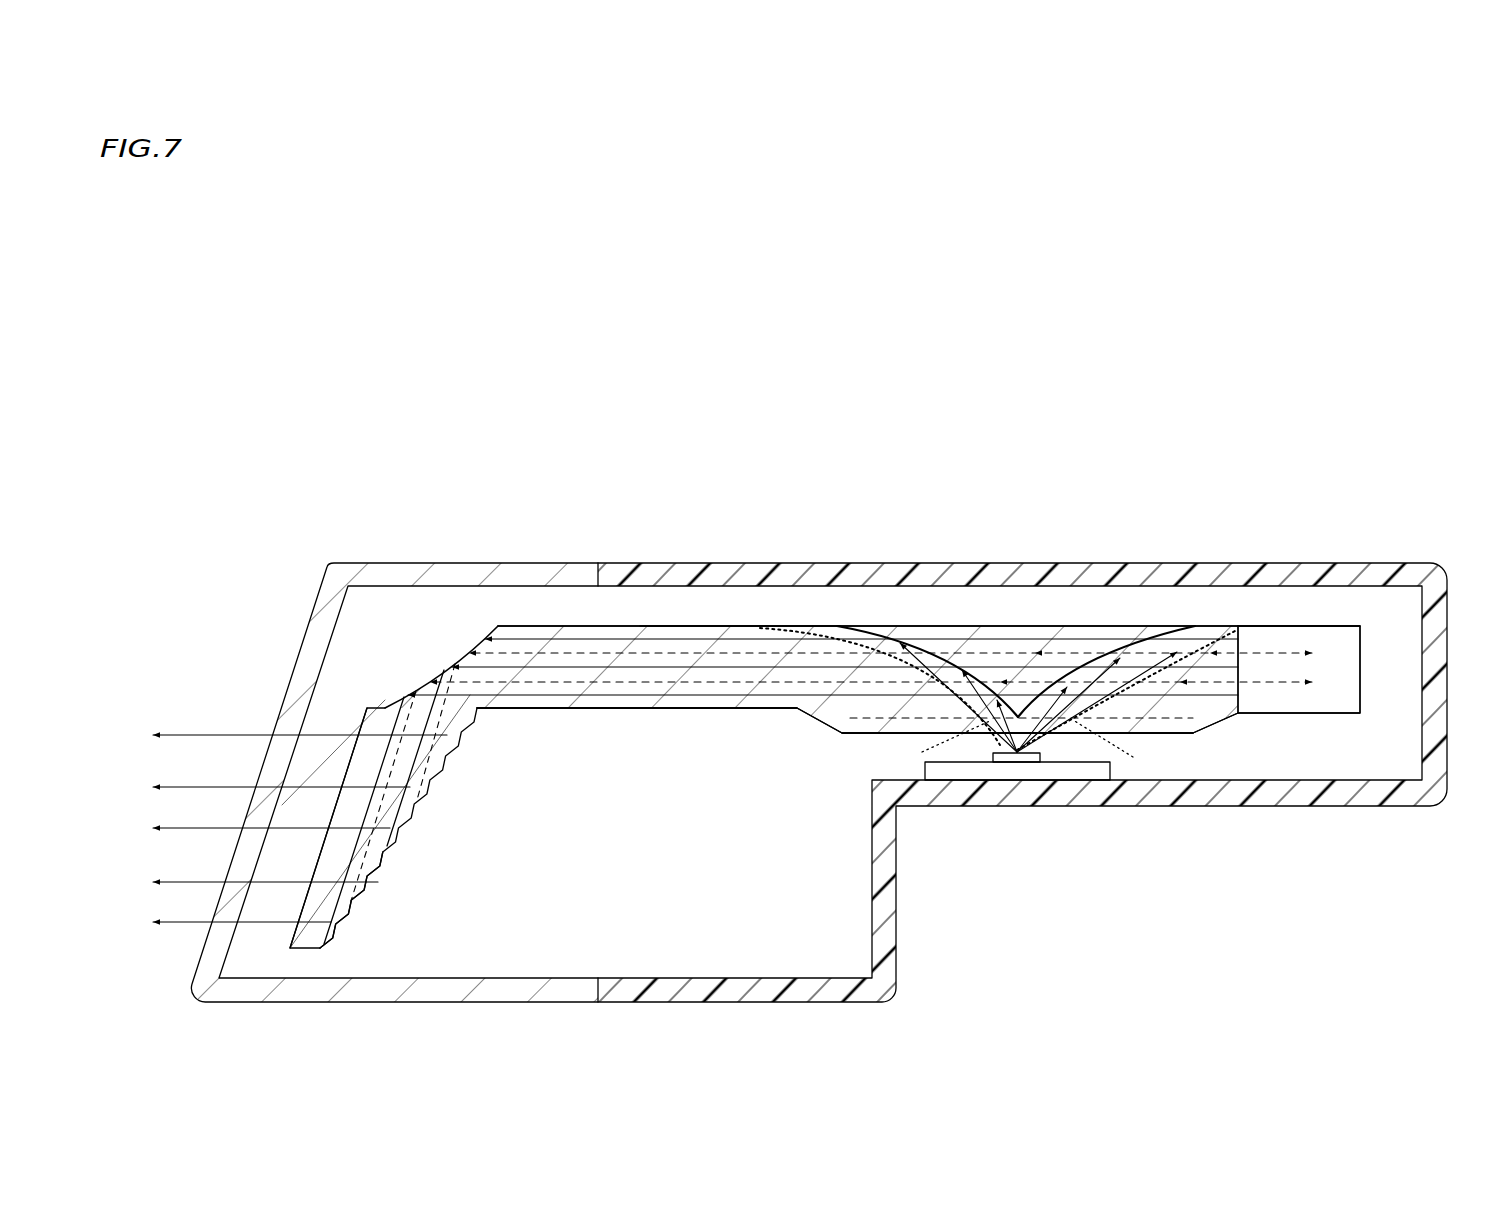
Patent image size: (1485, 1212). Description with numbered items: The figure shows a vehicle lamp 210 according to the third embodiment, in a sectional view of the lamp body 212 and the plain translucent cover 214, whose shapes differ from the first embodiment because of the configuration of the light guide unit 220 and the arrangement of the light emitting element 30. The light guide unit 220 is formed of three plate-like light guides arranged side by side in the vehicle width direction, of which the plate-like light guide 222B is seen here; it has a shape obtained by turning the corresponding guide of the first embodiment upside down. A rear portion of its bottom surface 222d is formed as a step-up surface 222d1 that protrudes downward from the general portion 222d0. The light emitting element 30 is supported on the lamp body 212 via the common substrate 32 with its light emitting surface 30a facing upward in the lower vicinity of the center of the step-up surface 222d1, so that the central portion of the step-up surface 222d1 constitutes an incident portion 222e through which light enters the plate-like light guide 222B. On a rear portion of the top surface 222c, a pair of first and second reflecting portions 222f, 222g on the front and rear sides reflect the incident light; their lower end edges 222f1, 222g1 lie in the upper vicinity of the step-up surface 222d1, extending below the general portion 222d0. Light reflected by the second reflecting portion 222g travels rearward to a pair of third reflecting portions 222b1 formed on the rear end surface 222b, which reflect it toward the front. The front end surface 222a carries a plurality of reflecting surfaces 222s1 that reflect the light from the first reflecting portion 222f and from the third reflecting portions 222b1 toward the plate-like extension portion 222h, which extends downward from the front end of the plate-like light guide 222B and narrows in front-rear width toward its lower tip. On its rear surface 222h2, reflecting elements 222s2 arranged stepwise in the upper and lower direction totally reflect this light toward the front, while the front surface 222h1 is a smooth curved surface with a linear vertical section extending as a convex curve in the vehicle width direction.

The vehicle lamp 210 is at (473, 340).
The lamp body 212 is at (1327, 560).
The plain translucent cover 214 is at (364, 560).
The light guide unit 220 is at (542, 606).
The front end surface 222a is at (437, 672).
The plate-like light guide 222B is at (661, 624).
The top surface 222c is at (721, 624).
The bottom surface 222d is at (848, 851).
The general portion 222d0 is at (717, 710).
The step-up surface 222d1 is at (847, 733).
The incident portion 222e is at (1010, 760).
The first reflecting portion 222f is at (952, 660).
The second reflecting portion 222g is at (1085, 660).
The lower end edge of first reflecting portion 222f1 is at (920, 748).
The lower end edge of second reflecting portion 222g1 is at (1143, 748).
The plate-like extension portion 222h is at (365, 780).
The front surface of plate-like extension portion 222h1 is at (385, 850).
The rear surface of plate-like extension portion 222h2 is at (380, 863).
The reflecting surfaces 222s1 is at (450, 663).
The reflecting elements 222s2 is at (430, 778).
The rear end surface 222b is at (1240, 692).
The third reflecting portions 222b1 is at (1333, 647).
The light emitting element 30 is at (1022, 770).
The light emitting surface 30a is at (1028, 757).
The common substrate 32 is at (1077, 772).